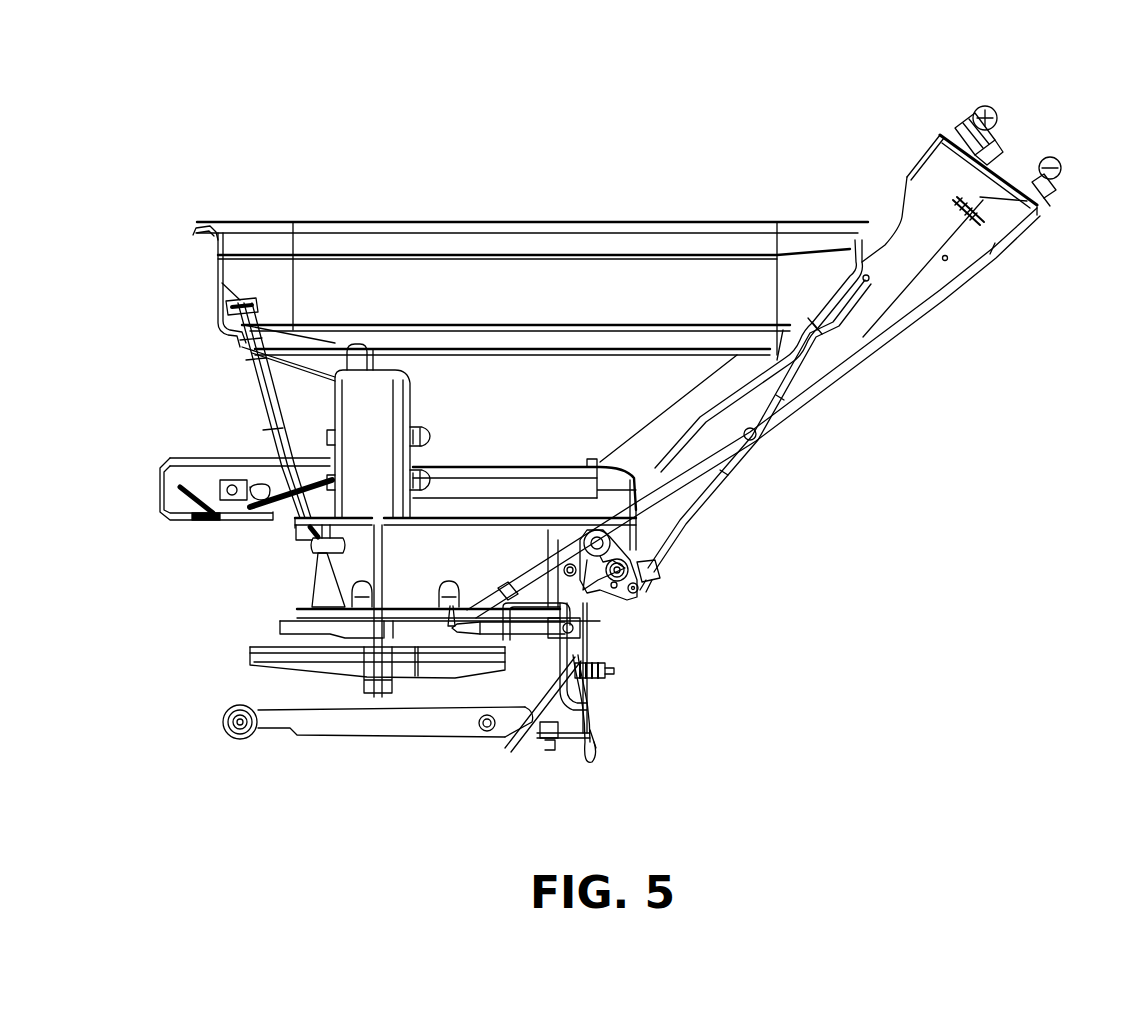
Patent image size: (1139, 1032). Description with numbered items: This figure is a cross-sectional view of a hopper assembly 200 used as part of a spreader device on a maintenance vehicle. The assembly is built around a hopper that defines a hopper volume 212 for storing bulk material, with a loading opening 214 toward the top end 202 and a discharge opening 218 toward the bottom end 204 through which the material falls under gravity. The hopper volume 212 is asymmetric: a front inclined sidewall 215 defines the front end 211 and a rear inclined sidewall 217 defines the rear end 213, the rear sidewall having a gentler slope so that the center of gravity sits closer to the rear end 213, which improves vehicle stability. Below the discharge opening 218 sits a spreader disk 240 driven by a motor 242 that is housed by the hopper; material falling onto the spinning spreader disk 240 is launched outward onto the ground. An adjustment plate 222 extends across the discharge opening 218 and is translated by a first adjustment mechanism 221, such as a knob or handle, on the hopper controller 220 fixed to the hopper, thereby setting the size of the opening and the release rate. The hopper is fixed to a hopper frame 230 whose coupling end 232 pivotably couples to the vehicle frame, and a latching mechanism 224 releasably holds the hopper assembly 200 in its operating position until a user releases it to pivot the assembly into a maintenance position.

The hopper assembly 200 is at (455, 124).
The top end 202 is at (602, 108).
The bottom end 204 is at (300, 606).
The front end 211 is at (160, 228).
The hopper volume 212 is at (462, 268).
The rear end 213 is at (905, 233).
The loading opening 214 is at (322, 222).
The front inclined sidewall 215 is at (250, 364).
The rear inclined sidewall 217 is at (712, 428).
The discharge opening 218 is at (430, 618).
The hopper controller 220 is at (1082, 110).
The first adjustment mechanism 221 is at (1003, 152).
The adjustment plate 222 is at (282, 621).
The latching mechanism 224 is at (596, 787).
The hopper frame 230 is at (303, 735).
The coupling end 232 is at (225, 729).
The spreader disk 240 is at (361, 672).
The motor 242 is at (372, 400).